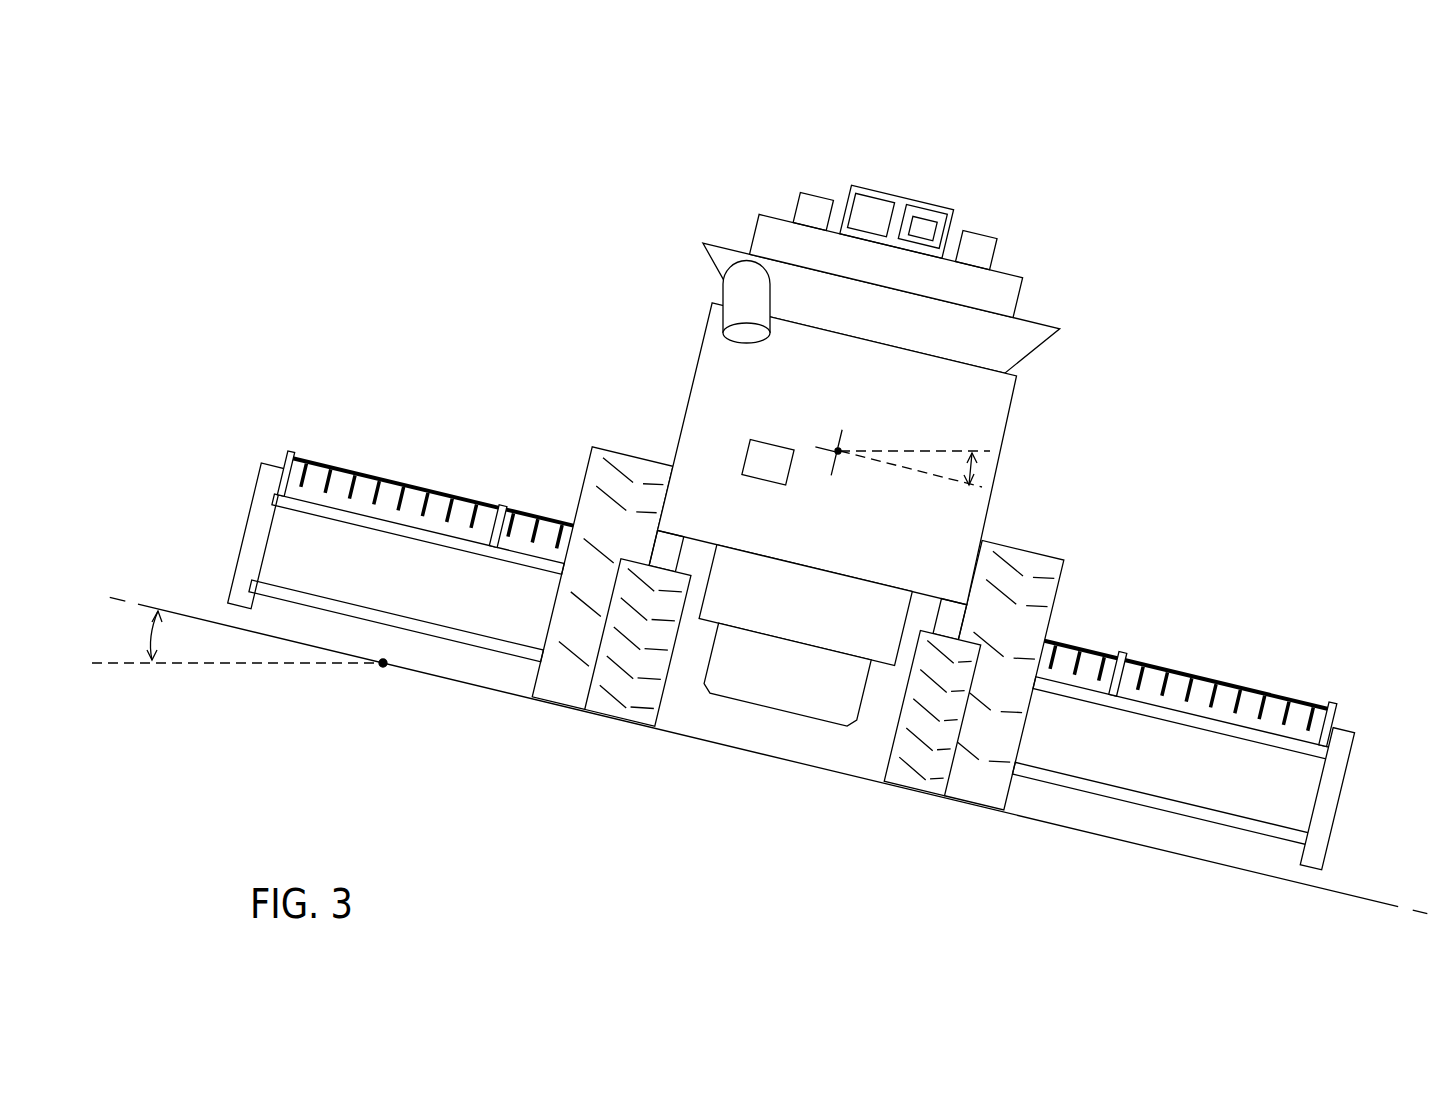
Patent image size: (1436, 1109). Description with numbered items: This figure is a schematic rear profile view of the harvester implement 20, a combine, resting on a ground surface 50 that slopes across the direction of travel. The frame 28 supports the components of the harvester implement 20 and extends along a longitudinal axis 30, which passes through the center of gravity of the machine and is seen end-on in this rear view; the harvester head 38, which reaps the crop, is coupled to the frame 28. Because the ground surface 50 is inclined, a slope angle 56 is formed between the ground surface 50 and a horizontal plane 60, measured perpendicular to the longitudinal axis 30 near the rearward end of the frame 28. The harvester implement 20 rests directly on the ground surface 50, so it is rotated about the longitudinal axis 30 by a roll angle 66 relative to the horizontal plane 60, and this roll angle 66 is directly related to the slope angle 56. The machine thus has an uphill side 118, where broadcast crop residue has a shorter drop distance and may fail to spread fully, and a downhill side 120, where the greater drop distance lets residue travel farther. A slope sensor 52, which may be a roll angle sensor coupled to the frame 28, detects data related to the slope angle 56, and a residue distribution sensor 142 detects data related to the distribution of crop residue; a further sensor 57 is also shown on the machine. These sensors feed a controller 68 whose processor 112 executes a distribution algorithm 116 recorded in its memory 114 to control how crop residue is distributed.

The harvester implement 20 is at (1036, 138).
The frame 28 is at (750, 706).
The longitudinal axis 30 is at (837, 451).
The harvester head 38 is at (1339, 803).
The ground surface 50 is at (181, 611).
The slope sensor 52 is at (808, 207).
The slope angle 56 is at (152, 637).
The sensor unit 57 is at (977, 247).
The horizontal plane 60 is at (193, 665).
The roll angle 66 is at (982, 470).
The controller 68 is at (860, 182).
The processor 112 is at (872, 213).
The memory 114 is at (918, 208).
The distribution algorithm 116 is at (927, 225).
The uphill side 118 is at (454, 371).
The downhill side 120 is at (1270, 571).
The residue distribution sensor 142 is at (768, 463).